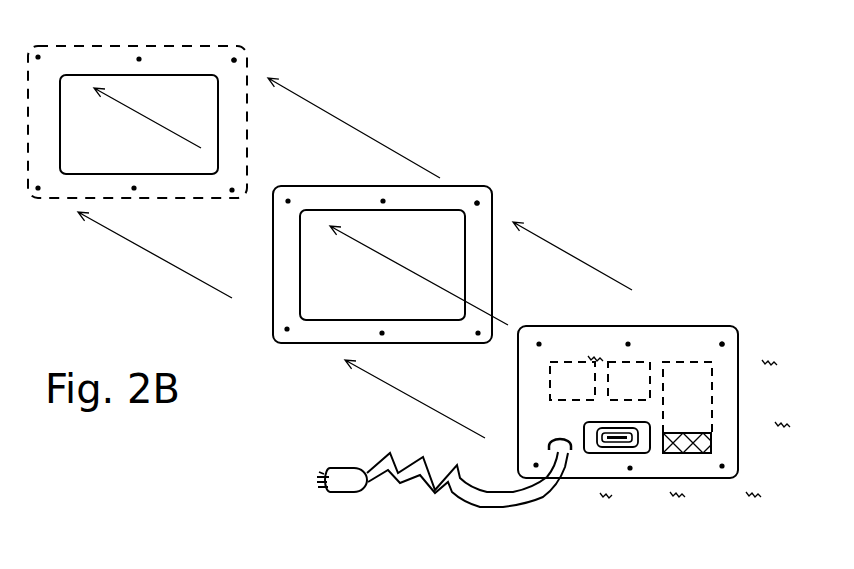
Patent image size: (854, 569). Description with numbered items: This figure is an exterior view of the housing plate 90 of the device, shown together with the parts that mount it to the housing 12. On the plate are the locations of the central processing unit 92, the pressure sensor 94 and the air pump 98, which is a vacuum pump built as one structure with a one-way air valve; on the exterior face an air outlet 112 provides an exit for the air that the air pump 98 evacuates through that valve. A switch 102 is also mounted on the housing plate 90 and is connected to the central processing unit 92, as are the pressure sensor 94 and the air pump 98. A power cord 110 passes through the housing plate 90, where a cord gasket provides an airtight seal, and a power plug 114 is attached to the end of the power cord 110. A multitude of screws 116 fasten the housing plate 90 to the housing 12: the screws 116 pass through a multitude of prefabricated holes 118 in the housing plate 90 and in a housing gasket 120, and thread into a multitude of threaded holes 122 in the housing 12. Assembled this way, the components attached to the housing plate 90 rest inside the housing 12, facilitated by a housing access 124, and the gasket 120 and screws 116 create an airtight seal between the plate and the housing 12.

The housing 12 is at (90, 62).
The housing access 124 is at (166, 100).
The threaded holes 122 is at (236, 60).
The housing gasket 120 is at (459, 197).
The prefabricated holes 118 is at (722, 344).
The housing plate 90 is at (730, 365).
The pressure sensor 94 is at (597, 367).
The central processing unit 92 is at (637, 365).
The air pump 98 is at (676, 365).
The air outlet 112 is at (700, 453).
The switch 102 is at (616, 437).
The power cord 110 is at (529, 495).
The power plug 114 is at (347, 482).
The screws 116 is at (768, 492).